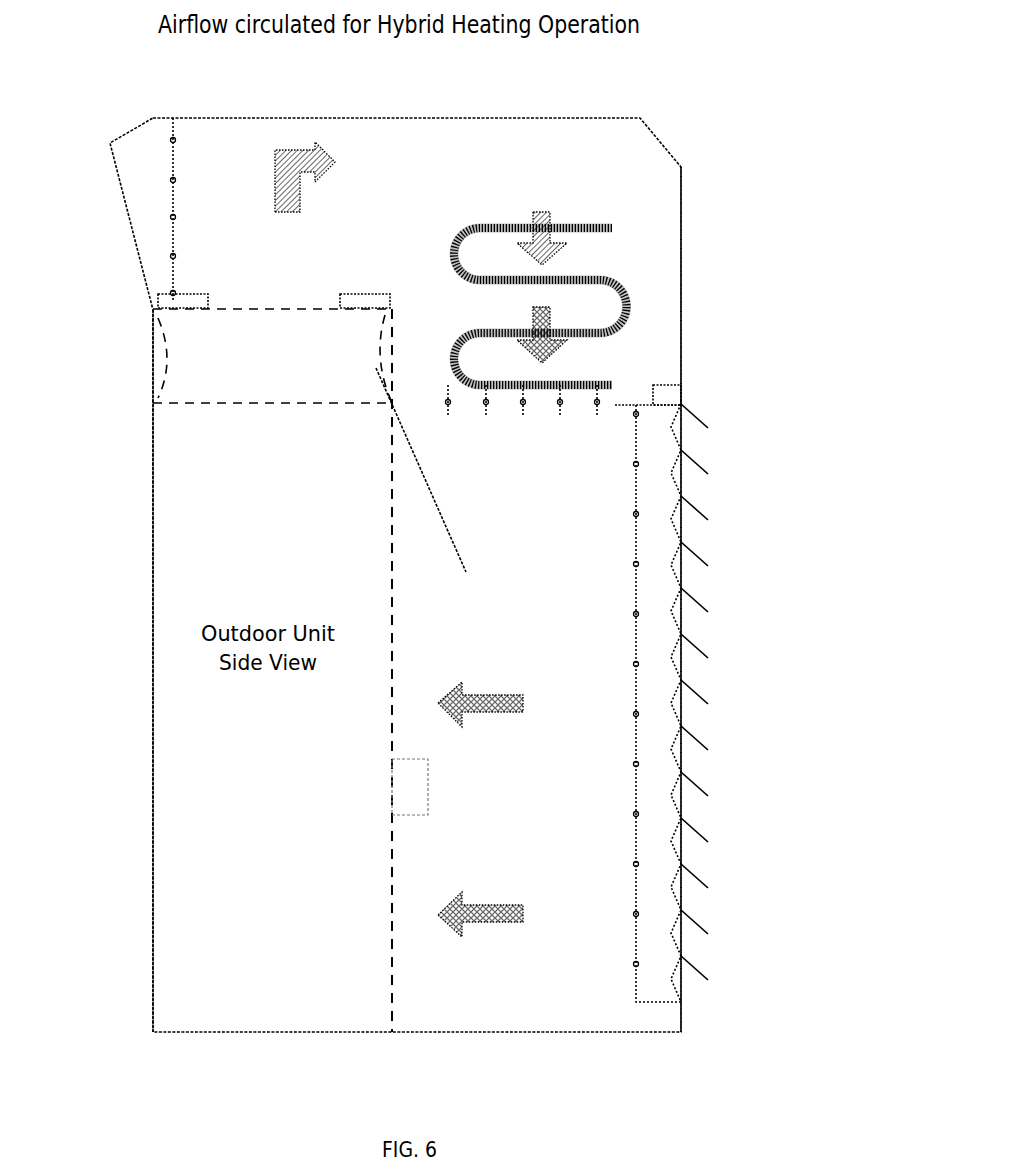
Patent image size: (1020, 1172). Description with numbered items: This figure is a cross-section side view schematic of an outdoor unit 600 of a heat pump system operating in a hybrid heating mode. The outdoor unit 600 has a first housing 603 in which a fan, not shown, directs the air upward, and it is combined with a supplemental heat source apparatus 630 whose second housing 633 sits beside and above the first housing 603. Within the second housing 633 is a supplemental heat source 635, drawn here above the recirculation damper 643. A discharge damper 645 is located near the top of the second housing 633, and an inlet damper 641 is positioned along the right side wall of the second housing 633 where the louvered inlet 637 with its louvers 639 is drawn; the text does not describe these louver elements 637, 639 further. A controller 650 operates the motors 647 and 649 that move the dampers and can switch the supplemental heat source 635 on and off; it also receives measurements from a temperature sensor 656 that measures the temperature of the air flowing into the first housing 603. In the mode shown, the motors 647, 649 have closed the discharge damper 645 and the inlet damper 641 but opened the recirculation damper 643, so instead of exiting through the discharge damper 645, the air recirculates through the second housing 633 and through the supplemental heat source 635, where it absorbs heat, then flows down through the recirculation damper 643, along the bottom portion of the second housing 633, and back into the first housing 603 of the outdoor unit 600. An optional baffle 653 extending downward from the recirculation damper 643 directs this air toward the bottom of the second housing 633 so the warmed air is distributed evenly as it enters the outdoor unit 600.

The outdoor unit 600 is at (122, 598).
The first housing 603 is at (153, 712).
The supplemental heat source apparatus 630 is at (731, 146).
The second housing 633 is at (681, 262).
The supplemental heat source 635 is at (508, 223).
The louvered air inlet 637 is at (703, 420).
The louvers 639 is at (682, 450).
The inlet damper 641 is at (636, 548).
The recirculation damper 643 is at (486, 416).
The discharge damper 645 is at (174, 188).
The motor 647 is at (653, 384).
The motor 649 is at (205, 293).
The controller 650 is at (355, 293).
The baffle 653 is at (466, 572).
The temperature sensor 656 is at (409, 815).